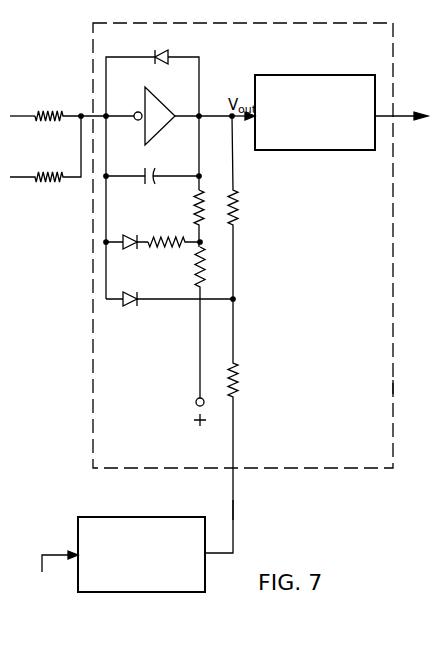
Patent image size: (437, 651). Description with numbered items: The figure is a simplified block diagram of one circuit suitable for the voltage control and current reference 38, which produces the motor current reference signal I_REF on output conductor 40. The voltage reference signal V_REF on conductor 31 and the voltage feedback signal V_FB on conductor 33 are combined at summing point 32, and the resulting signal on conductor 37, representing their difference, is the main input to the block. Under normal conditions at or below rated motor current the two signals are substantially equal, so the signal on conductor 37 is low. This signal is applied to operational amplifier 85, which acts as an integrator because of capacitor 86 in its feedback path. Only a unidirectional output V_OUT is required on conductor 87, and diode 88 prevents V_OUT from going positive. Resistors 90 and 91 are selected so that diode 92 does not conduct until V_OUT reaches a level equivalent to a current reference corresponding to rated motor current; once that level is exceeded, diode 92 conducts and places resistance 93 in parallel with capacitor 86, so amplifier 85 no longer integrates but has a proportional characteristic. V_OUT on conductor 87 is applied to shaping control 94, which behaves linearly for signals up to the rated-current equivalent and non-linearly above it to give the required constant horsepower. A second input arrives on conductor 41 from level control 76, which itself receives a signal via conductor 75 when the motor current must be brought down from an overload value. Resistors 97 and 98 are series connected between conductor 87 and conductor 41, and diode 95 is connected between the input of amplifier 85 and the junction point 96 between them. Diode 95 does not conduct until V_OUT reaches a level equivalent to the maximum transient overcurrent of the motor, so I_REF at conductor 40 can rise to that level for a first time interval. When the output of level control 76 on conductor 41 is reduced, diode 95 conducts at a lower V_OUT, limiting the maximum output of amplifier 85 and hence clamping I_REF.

The conductor 31 is at (31, 114).
The summing point 32 is at (81, 113).
The conductor 33 is at (37, 175).
The conductor 37 is at (92, 110).
The voltage control and current reference 38 is at (395, 400).
The conductor 40 is at (393, 111).
The conductor 41 is at (236, 510).
The conductor 75 is at (73, 552).
The level control 76 is at (136, 517).
The operational amplifier 85 is at (161, 101).
The capacitor 86 is at (155, 176).
The conductor 87 is at (201, 115).
The diode 88 is at (168, 57).
The resistor 90 is at (200, 200).
The resistor 91 is at (202, 262).
The diode 92 is at (137, 235).
The resistance 93 is at (180, 237).
The shaping control 94 is at (301, 75).
The diode 95 is at (137, 290).
The junction point 96 is at (236, 299).
The resistor 97 is at (235, 200).
The resistor 98 is at (236, 365).